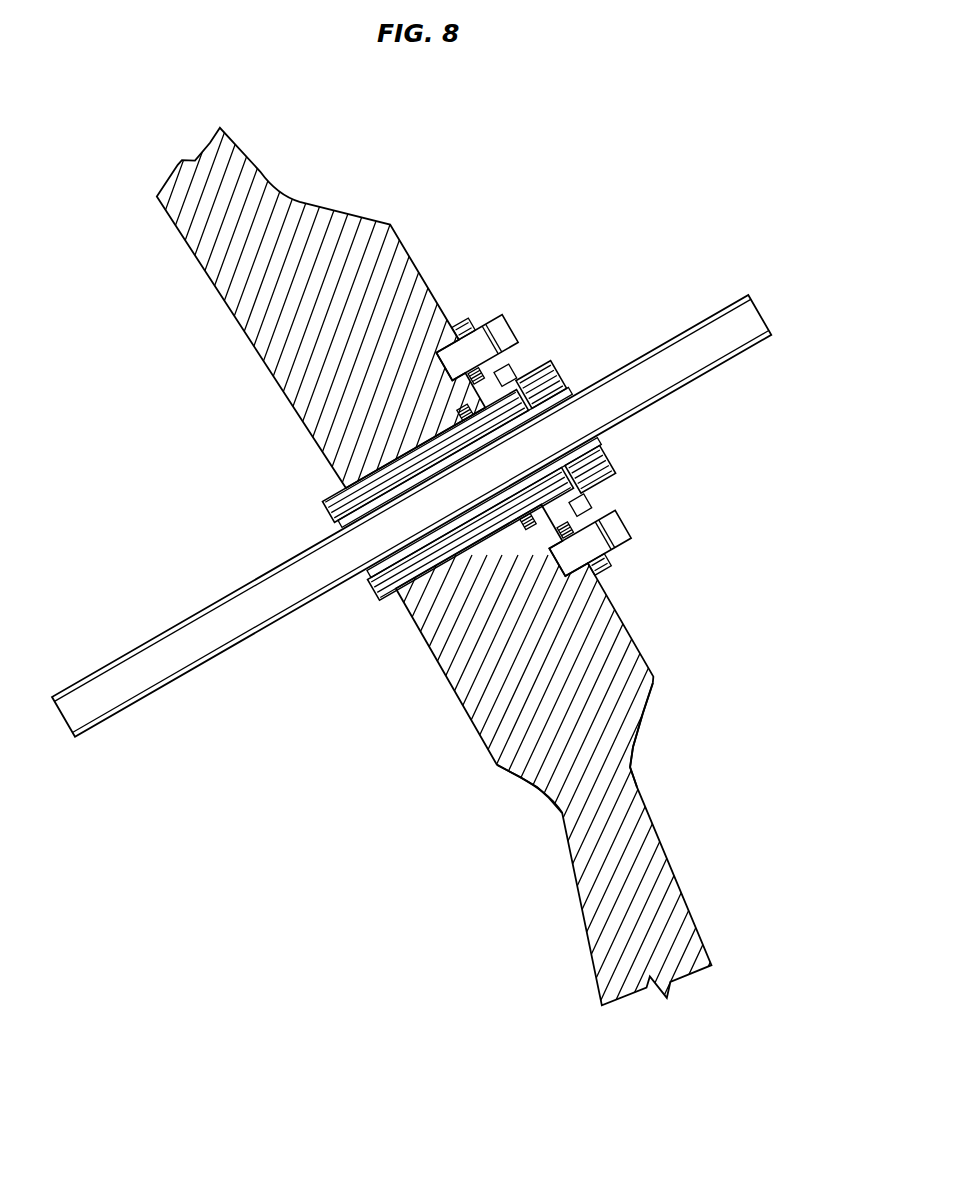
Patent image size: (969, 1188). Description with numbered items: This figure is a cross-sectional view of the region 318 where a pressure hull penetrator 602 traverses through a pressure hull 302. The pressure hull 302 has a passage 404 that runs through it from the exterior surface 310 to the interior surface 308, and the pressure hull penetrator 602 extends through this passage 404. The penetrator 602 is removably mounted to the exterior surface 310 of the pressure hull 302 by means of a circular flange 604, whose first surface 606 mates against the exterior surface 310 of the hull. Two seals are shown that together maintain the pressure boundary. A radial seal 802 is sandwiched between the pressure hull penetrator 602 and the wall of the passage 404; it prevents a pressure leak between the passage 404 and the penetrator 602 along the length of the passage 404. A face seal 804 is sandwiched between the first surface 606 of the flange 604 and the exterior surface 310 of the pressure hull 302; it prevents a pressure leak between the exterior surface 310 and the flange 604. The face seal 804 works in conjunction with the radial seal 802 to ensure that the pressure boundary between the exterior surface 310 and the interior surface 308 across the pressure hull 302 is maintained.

The pressure hull 302 is at (618, 640).
The interior surface 308 is at (484, 797).
The exterior surface 310 is at (694, 688).
The region 318 is at (483, 198).
The passage 404 is at (350, 486).
The pressure hull penetrator 602 is at (594, 465).
The circular flange 604 is at (458, 326).
The first surface 606 is at (455, 407).
The radial seal 802 is at (557, 373).
The face seal 804 is at (507, 379).